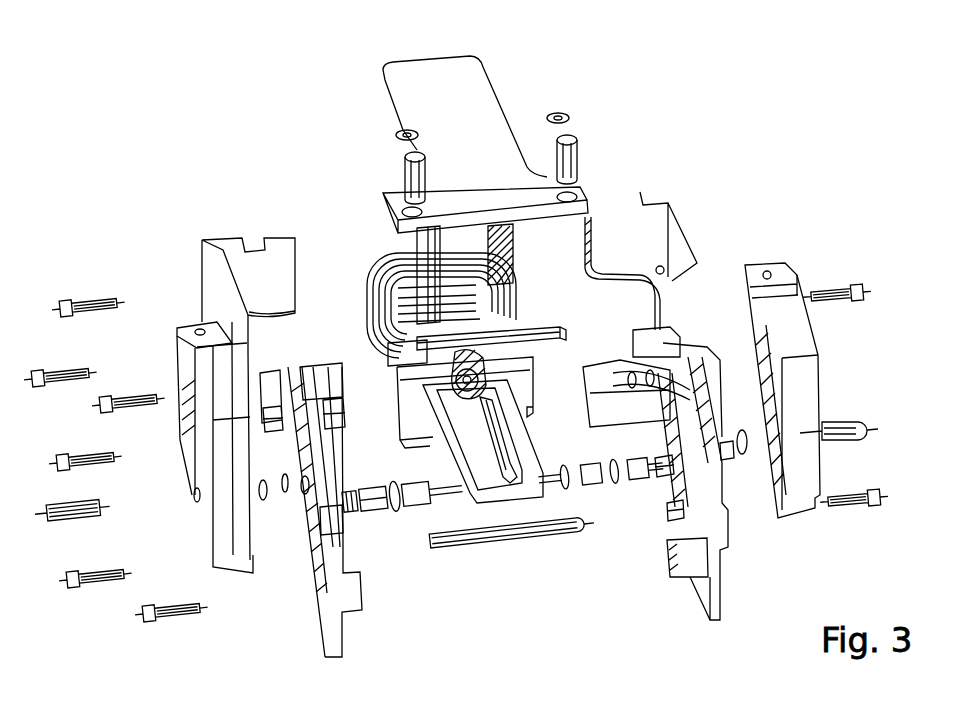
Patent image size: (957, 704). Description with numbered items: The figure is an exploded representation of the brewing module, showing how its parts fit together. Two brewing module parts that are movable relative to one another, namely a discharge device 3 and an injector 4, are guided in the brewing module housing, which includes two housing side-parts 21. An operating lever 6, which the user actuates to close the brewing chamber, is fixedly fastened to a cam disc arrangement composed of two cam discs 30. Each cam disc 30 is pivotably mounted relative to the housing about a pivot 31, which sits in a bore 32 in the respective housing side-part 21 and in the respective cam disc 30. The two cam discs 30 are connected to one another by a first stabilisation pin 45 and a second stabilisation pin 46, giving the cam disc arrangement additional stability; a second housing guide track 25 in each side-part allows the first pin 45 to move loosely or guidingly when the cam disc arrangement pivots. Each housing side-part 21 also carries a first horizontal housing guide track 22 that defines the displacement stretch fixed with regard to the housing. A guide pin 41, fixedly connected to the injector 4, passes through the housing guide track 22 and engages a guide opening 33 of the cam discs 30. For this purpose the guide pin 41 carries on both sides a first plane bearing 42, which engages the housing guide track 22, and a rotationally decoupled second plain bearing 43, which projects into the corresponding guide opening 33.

The discharge device 3 is at (380, 250).
The injector 4 is at (497, 303).
The operating lever 6 is at (467, 112).
The housing side-part 21 is at (650, 263).
The first horizontal housing guide track 22 is at (293, 540).
The second housing guide track 25 is at (718, 345).
The cam disc 30 is at (195, 327).
The pivot 31 is at (855, 422).
The bore 32 is at (285, 483).
The guide opening 33 is at (775, 455).
The guide pin 41 is at (452, 497).
The first plane bearing 42 is at (591, 487).
The second plain bearing 43 is at (645, 468).
The first stabilisation pin 45 is at (497, 537).
The second stabilisation pin 46 is at (371, 280).